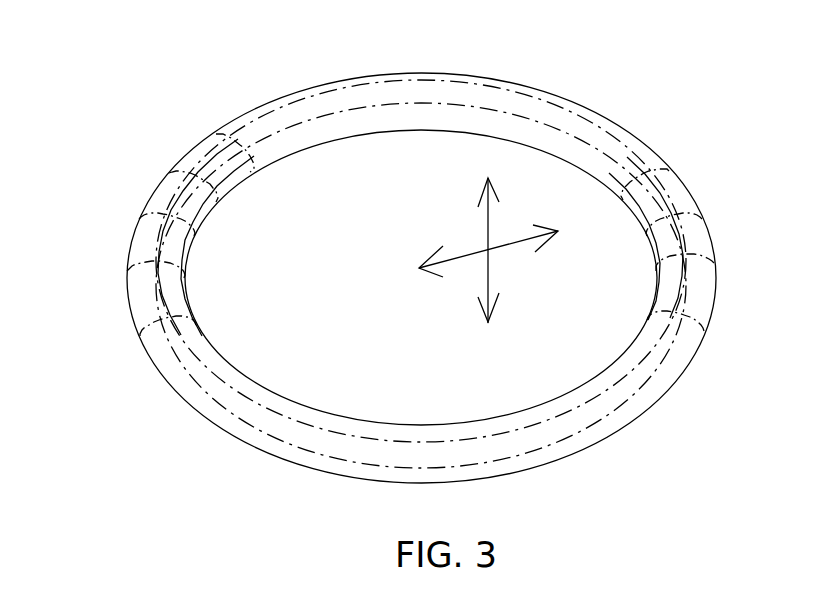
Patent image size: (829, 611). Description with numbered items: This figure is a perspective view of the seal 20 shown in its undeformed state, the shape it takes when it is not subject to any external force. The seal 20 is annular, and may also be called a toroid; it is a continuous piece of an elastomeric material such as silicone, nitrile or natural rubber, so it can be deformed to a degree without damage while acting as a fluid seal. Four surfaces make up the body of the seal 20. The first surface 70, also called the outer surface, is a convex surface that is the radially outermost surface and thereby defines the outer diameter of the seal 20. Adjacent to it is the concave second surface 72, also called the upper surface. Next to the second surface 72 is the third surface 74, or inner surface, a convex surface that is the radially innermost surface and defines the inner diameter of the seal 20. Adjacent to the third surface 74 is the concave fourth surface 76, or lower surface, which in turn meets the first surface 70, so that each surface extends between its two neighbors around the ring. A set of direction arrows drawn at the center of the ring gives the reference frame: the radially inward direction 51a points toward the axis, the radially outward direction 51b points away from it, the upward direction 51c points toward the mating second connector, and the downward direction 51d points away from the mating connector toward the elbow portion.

The seal 20 is at (205, 55).
The first surface 70 is at (152, 342).
The second surface 72 is at (182, 238).
The third surface 74 is at (172, 321).
The fourth surface 76 is at (395, 132).
The radially inward direction 51a is at (458, 257).
The radially outward direction 51b is at (523, 243).
The upward direction 51c is at (490, 213).
The downward direction 51d is at (477, 285).